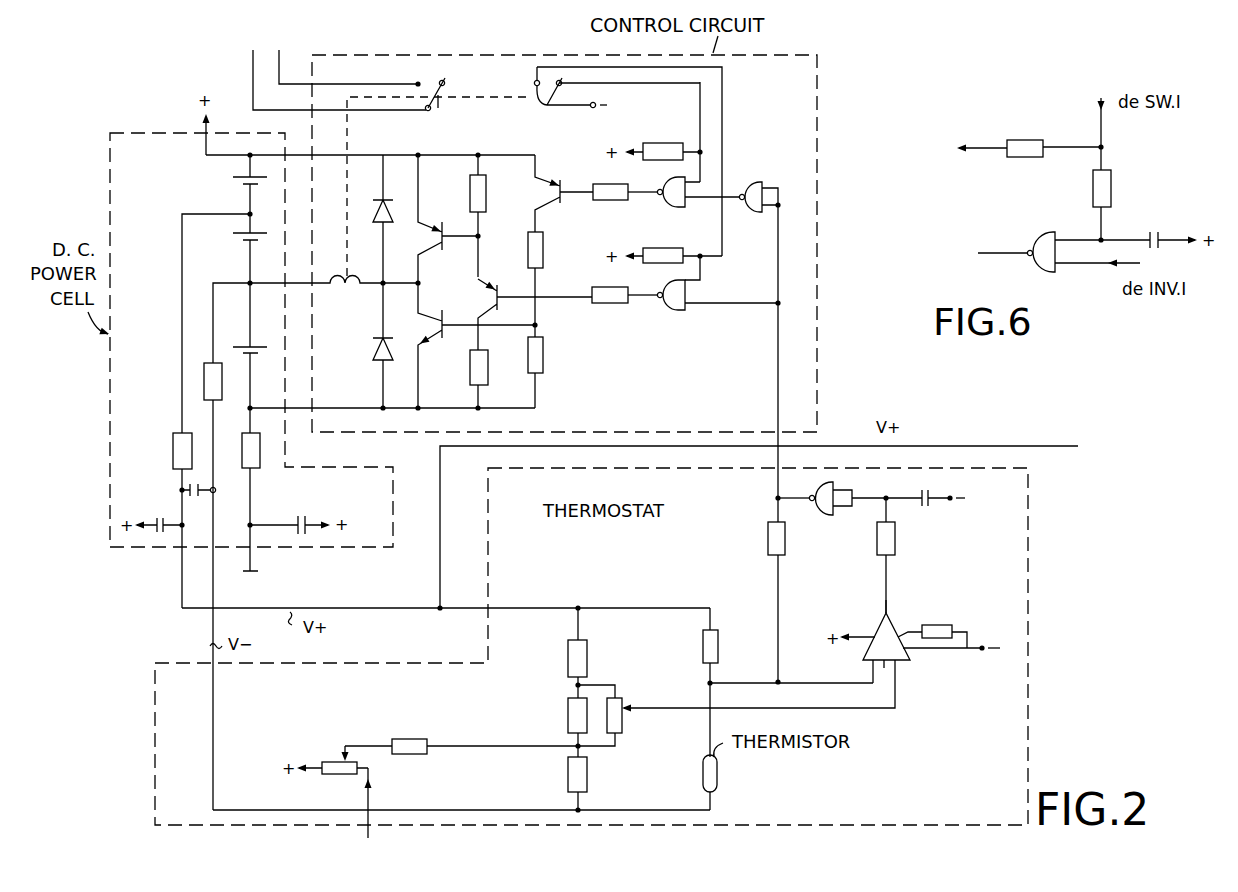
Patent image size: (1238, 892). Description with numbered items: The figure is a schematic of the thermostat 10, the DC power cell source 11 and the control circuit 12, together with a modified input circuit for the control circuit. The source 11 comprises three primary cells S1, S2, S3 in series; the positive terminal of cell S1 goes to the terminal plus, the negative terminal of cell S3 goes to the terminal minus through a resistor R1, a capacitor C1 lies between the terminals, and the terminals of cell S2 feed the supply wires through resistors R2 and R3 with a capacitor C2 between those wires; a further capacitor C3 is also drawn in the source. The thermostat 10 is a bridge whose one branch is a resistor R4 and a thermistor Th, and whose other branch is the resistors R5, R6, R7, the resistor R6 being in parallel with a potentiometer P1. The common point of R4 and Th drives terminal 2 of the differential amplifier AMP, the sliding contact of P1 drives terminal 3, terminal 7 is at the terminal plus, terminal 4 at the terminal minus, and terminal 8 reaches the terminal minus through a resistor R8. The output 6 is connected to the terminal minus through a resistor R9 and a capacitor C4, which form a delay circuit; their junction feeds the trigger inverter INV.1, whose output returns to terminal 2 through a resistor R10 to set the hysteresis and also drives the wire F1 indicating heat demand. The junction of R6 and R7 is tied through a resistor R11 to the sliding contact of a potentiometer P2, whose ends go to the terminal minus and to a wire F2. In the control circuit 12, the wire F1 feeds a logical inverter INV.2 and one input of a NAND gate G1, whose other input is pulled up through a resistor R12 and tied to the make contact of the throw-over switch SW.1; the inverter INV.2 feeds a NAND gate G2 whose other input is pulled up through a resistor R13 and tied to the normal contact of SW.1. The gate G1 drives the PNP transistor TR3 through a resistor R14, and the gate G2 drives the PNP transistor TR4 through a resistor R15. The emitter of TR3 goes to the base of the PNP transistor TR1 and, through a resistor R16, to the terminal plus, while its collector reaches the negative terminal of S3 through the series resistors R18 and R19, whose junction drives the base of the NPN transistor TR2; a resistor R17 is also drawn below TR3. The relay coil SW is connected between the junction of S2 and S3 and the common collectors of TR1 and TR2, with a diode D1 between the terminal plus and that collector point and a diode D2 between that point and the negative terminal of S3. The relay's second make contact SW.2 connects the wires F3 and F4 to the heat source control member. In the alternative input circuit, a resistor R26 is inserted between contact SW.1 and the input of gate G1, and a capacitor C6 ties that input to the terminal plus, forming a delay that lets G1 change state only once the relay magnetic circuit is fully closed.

In FIG. 2, the thermostat 10 is at (1018, 686).
In FIG. 2, the power cell source 11 is at (151, 145).
In FIG. 2, the control circuit 12 is at (808, 121).
In FIG. 2, the primary cell S1 is at (232, 187).
In FIG. 2, the primary cell S2 is at (238, 240).
In FIG. 2, the primary cell S3 is at (233, 352).
In FIG. 2, the resistor R1 is at (267, 465).
In FIG. 2, the resistor R2 is at (177, 447).
In FIG. 2, the resistor R3 is at (230, 387).
In FIG. 2, the resistor R4 is at (718, 645).
In FIG. 2, the resistor R5 is at (585, 660).
In FIG. 2, the resistor R6 is at (566, 728).
In FIG. 2, the resistor R7 is at (587, 779).
In FIG. 2, the resistor R8 is at (941, 630).
In FIG. 2, the resistor R9 is at (896, 545).
In FIG. 2, the resistor R10 is at (766, 545).
In FIG. 2, the resistor R11 is at (408, 741).
In FIG. 2, the resistor R12 is at (668, 249).
In FIG. 6, the resistor R12 is at (1016, 140).
In FIG. 2, the resistor R13 is at (656, 143).
In FIG. 2, the resistor R14 is at (612, 303).
In FIG. 2, the resistor R15 is at (610, 202).
In FIG. 2, the resistor R16 is at (487, 197).
In FIG. 2, the resistor R17 is at (480, 377).
In FIG. 2, the resistor R18 is at (543, 242).
In FIG. 2, the resistor R19 is at (543, 360).
In FIG. 6, the resistor R26 is at (1111, 188).
In FIG. 2, the capacitor C1 is at (308, 519).
In FIG. 2, the capacitor C2 is at (179, 486).
In FIG. 2, the capacitor C3 is at (155, 520).
In FIG. 2, the capacitor C4 is at (929, 493).
In FIG. 6, the capacitor C6 is at (1158, 235).
In FIG. 2, the diode D1 is at (390, 215).
In FIG. 2, the diode D2 is at (372, 351).
In FIG. 2, the PNP transistor TR1 is at (432, 222).
In FIG. 2, the NPN transistor TR2 is at (437, 311).
In FIG. 2, the PNP transistor TR3 is at (494, 284).
In FIG. 2, the PNP transistor TR4 is at (560, 183).
In FIG. 2, the NAND gate G1 is at (673, 311).
In FIG. 6, the NAND gate G1 is at (1036, 244).
In FIG. 2, the NAND gate G2 is at (668, 208).
In FIG. 2, the inverter INV.1 is at (824, 516).
In FIG. 2, the logical inverter INV.2 is at (752, 214).
In FIG. 2, the relay coil SW is at (345, 290).
In FIG. 2, the throw-over switch SW.1 is at (601, 98).
In FIG. 2, the make contact SW.2 is at (453, 104).
In FIG. 2, the wire F1 is at (779, 406).
In FIG. 2, the wire F2 is at (369, 795).
In FIG. 2, the wire F3 is at (280, 86).
In FIG. 2, the wire F4 is at (253, 86).
In FIG. 2, the potentiometer P1 is at (622, 728).
In FIG. 2, the potentiometer P2 is at (324, 756).
In FIG. 2, the thermistor Th is at (717, 778).
In FIG. 2, the differential amplifier AMP is at (811, 653).
In FIG. 2, the amplifier terminal 2 is at (868, 662).
In FIG. 2, the amplifier terminal 3 is at (906, 665).
In FIG. 2, the amplifier terminal 4 is at (884, 668).
In FIG. 2, the amplifier output 6 is at (892, 603).
In FIG. 2, the amplifier terminal 7 is at (876, 643).
In FIG. 2, the amplifier terminal 8 is at (915, 631).